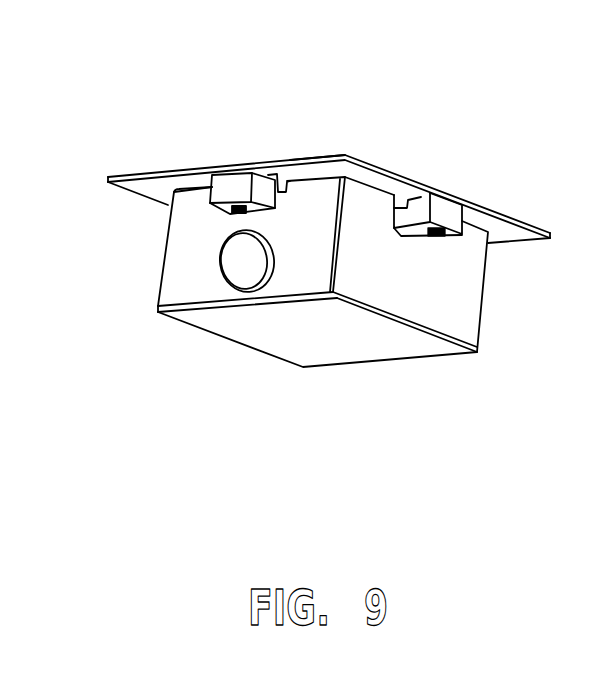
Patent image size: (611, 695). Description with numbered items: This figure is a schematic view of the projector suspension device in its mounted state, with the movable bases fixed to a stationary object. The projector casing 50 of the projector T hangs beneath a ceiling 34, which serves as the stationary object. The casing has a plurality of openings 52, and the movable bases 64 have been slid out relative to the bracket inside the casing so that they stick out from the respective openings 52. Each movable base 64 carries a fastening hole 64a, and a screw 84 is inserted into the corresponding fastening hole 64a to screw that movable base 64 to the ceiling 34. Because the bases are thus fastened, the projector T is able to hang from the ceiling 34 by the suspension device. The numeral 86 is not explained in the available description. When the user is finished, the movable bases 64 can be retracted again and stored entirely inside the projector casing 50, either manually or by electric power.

The projector T is at (162, 262).
The ceiling 34 is at (407, 177).
The panel edge 86 is at (314, 162).
The projector casing 50 is at (190, 186).
The movable base 64 is at (236, 185).
The fastening hole 64a is at (441, 229).
The opening 52 is at (274, 173).
The screw 84 is at (437, 243).